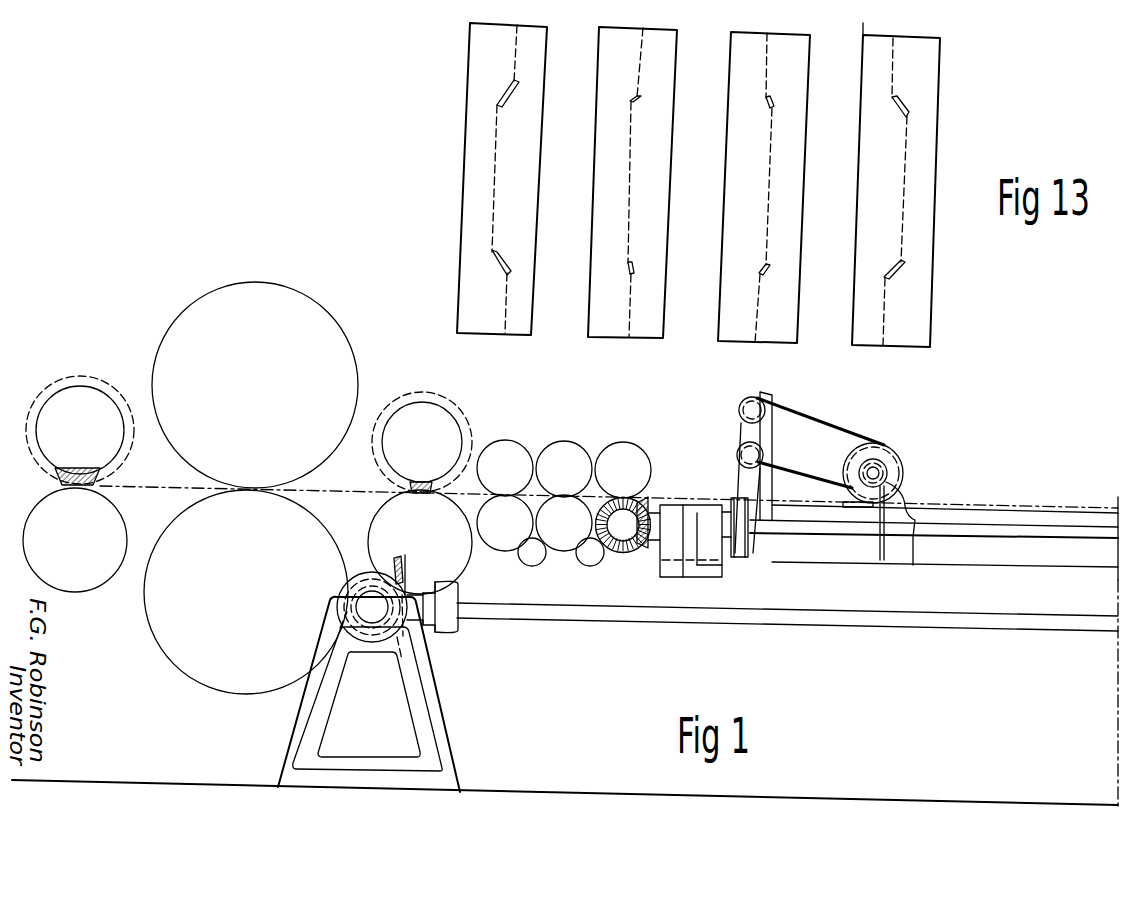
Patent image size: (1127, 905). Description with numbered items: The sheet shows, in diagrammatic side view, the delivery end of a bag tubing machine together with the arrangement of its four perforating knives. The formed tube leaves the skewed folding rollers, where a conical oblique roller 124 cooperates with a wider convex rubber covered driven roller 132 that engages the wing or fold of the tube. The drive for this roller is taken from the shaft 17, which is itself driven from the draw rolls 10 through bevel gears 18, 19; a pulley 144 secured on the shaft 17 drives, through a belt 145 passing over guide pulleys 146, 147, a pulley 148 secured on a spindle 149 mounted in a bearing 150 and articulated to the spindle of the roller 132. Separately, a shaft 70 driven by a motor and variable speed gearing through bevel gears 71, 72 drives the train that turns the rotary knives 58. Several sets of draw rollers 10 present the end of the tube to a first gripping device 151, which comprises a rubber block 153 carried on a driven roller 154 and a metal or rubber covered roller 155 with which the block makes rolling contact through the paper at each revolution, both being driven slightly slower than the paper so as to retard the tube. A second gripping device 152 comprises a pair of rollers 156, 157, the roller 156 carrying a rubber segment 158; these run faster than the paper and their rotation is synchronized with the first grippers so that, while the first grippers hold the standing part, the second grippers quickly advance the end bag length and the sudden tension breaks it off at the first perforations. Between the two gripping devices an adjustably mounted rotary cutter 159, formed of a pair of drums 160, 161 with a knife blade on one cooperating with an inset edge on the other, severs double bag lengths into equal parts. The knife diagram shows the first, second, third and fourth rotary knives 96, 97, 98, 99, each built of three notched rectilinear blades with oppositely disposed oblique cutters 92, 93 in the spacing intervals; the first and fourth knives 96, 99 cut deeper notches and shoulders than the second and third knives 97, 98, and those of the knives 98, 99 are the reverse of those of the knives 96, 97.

In FIG. 1, the draw rolls 10 is at (617, 447).
In FIG. 1, the shaft 17 is at (980, 535).
In FIG. 1, the bevel gear 18 is at (648, 503).
In FIG. 1, the bevel gear 19 is at (623, 553).
In FIG. 13, the rotary knives 58 is at (538, 165).
In FIG. 1, the shaft 70 is at (758, 618).
In FIG. 1, the bevel gear 71 is at (398, 568).
In FIG. 1, the bevel gear 72 is at (365, 572).
In FIG. 13, the oblique cutter 92 is at (493, 262).
In FIG. 13, the oblique cutter 93 is at (500, 93).
In FIG. 13, the first knife 96 is at (473, 34).
In FIG. 13, the second knife 97 is at (603, 37).
In FIG. 13, the third knife 98 is at (733, 43).
In FIG. 13, the fourth knife 99 is at (870, 43).
In FIG. 1, the oblique roller 124 is at (870, 507).
In FIG. 1, the rubber covered driven roller 132 is at (902, 462).
In FIG. 1, the pulley 144 is at (748, 560).
In FIG. 1, the belt 145 is at (817, 422).
In FIG. 1, the guide pulley 146 is at (740, 452).
In FIG. 1, the guide pulley 147 is at (742, 413).
In FIG. 1, the pulley 148 is at (885, 452).
In FIG. 1, the spindle 149 is at (885, 473).
In FIG. 1, the bearing 150 is at (897, 553).
In FIG. 1, the first gripping device 151 is at (422, 390).
In FIG. 1, the second gripping device 152 is at (82, 373).
In FIG. 1, the rubber block 153 is at (390, 485).
In FIG. 1, the driven roller 154 is at (453, 432).
In FIG. 1, the roller 155 is at (470, 563).
In FIG. 1, the roller 156 is at (93, 410).
In FIG. 1, the roller 157 is at (118, 508).
In FIG. 1, the rubber segment 158 is at (100, 480).
In FIG. 1, the rotary cutter 159 is at (251, 283).
In FIG. 1, the drum 160 is at (305, 300).
In FIG. 1, the drum 161 is at (147, 617).